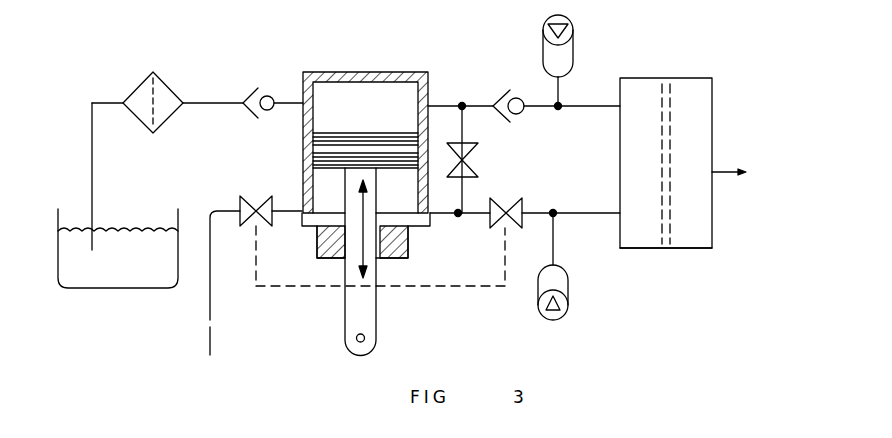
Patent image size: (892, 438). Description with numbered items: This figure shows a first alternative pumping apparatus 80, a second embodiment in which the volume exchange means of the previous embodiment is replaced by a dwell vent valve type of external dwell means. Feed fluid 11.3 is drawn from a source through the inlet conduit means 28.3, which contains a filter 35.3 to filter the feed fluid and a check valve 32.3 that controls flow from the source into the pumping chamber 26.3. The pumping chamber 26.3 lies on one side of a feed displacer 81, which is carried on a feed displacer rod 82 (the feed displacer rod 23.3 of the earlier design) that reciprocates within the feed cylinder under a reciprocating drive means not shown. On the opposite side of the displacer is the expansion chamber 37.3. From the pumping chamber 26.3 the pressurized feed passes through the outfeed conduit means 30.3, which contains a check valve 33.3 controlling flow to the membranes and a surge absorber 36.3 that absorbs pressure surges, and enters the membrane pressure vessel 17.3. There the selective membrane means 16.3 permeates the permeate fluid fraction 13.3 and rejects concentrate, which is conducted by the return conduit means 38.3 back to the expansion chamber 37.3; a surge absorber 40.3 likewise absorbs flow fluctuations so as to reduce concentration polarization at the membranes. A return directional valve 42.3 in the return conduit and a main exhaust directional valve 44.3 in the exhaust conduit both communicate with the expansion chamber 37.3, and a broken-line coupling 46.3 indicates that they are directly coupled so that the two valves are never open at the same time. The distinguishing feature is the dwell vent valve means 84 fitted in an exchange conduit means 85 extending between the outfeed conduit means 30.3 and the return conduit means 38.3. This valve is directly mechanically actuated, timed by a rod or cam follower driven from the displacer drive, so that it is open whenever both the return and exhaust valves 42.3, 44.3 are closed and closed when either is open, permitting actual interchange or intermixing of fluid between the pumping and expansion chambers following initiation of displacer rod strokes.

The feed fluid 11.3 is at (146, 270).
The permeate fluid fraction 13.3 is at (725, 175).
The selective membrane means 16.3 is at (668, 130).
The membrane pressure vessel 17.3 is at (680, 251).
The feed displacer rod 23.3 is at (345, 330).
The pumping chamber 26.3 is at (347, 93).
The inlet conduit means 28.3 is at (196, 103).
The outfeed conduit means 30.3 is at (537, 109).
The check valve 32.3 is at (268, 96).
The check valve 33.3 is at (517, 97).
The filter 35.3 is at (164, 84).
The surge absorber 36.3 is at (573, 30).
The expansion chamber 37.3 is at (394, 201).
The return conduit means 38.3 is at (550, 217).
The surge absorber 40.3 is at (568, 313).
The return directional valve 42.3 is at (517, 232).
The main exhaust directional valve 44.3 is at (238, 213).
The coupling 46.3 is at (400, 287).
The first alternative pumping apparatus 80 is at (379, 58).
The feed displacer 81 is at (287, 134).
The feed displacer rod 82 is at (366, 275).
The dwell vent valve means 84 is at (507, 167).
The exchange conduit means 85 is at (465, 124).